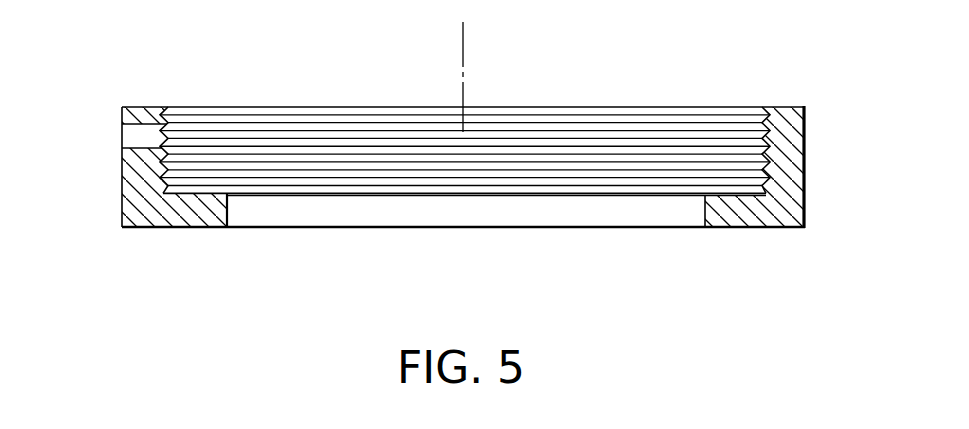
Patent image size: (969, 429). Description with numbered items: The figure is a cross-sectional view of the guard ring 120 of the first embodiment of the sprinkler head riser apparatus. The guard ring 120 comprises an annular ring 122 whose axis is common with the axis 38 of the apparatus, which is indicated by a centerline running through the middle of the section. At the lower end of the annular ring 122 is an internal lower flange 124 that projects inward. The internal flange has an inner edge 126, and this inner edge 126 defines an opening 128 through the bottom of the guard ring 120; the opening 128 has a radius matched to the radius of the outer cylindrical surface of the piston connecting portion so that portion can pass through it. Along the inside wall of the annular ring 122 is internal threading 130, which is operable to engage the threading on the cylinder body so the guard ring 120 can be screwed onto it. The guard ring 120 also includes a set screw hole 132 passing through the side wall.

The guard ring 120 is at (128, 72).
The axis 38 is at (466, 38).
The set screw hole 132 is at (133, 135).
The internal threading 130 is at (762, 147).
The annular ring 122 is at (806, 166).
The internal lower flange 124 is at (780, 208).
The inner edge 126 is at (703, 203).
The opening 128 is at (274, 210).